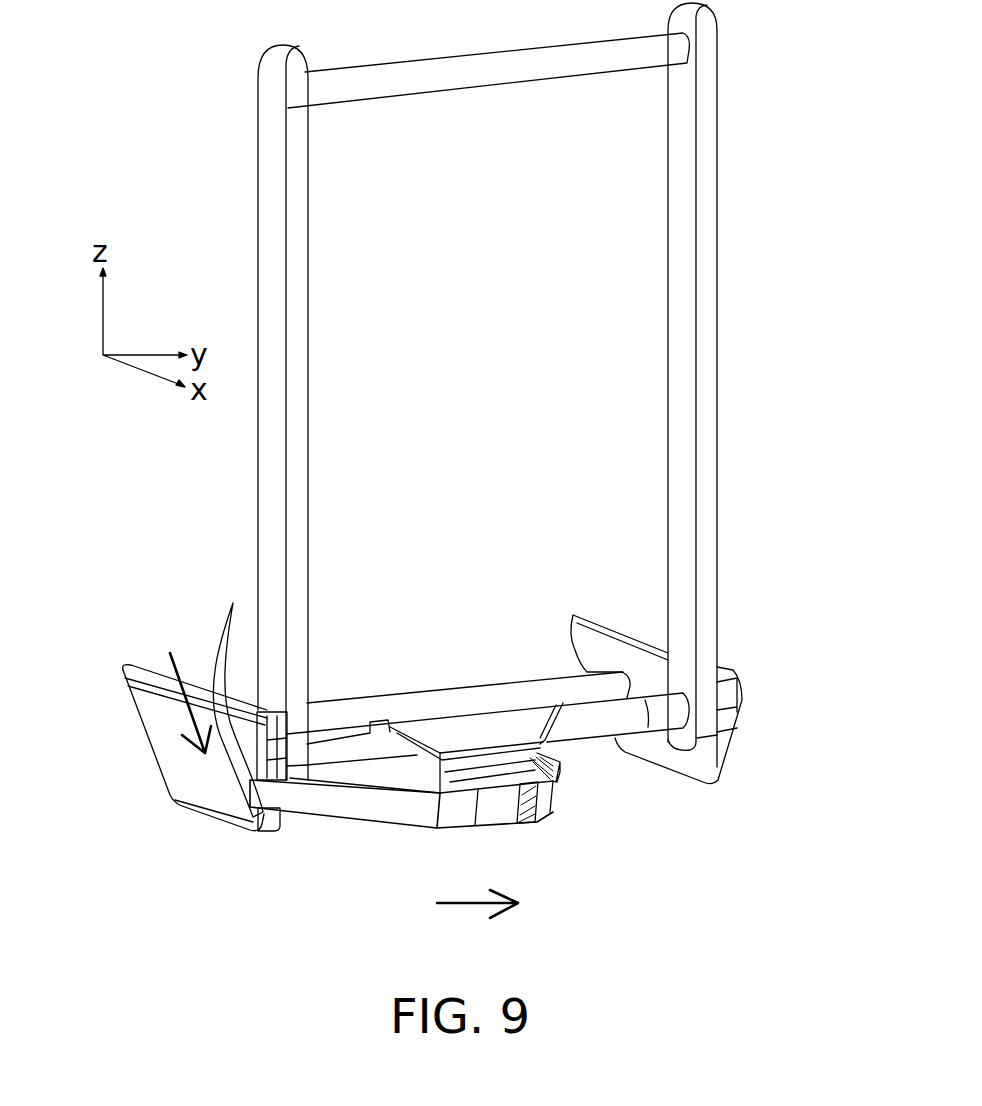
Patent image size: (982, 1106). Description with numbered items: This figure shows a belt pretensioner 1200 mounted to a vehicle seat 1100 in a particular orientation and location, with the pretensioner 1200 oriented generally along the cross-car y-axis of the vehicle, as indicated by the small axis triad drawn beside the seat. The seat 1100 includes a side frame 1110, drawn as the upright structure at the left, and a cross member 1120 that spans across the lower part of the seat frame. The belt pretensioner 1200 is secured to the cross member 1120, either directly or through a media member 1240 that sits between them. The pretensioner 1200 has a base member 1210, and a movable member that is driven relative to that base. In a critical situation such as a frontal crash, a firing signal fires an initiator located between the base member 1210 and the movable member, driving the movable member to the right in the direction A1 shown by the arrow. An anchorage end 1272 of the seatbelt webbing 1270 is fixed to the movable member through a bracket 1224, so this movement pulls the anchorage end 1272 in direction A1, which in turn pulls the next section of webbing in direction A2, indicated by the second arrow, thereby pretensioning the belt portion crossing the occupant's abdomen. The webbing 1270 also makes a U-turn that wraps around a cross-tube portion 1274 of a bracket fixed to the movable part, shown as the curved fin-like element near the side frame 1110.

The seat 1100 is at (718, 443).
The side frame 1110 is at (172, 762).
The cross member 1120 is at (610, 722).
The belt pretensioner 1200 is at (523, 632).
The base member 1210 is at (437, 793).
The bracket 1224 is at (557, 813).
The media member 1240 is at (457, 742).
The seatbelt webbing 1270 is at (418, 815).
The anchorage end 1272 is at (530, 812).
The cross-tube portion 1274 is at (217, 635).
The direction A1 is at (477, 884).
The direction A2 is at (174, 684).